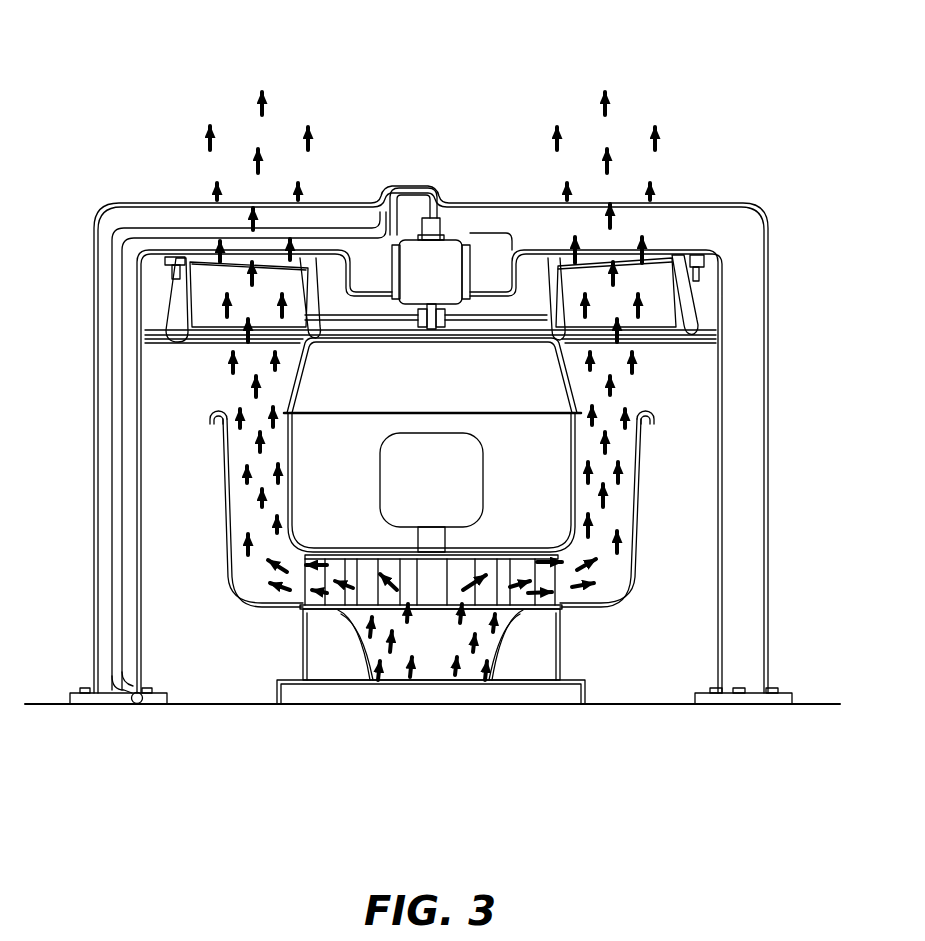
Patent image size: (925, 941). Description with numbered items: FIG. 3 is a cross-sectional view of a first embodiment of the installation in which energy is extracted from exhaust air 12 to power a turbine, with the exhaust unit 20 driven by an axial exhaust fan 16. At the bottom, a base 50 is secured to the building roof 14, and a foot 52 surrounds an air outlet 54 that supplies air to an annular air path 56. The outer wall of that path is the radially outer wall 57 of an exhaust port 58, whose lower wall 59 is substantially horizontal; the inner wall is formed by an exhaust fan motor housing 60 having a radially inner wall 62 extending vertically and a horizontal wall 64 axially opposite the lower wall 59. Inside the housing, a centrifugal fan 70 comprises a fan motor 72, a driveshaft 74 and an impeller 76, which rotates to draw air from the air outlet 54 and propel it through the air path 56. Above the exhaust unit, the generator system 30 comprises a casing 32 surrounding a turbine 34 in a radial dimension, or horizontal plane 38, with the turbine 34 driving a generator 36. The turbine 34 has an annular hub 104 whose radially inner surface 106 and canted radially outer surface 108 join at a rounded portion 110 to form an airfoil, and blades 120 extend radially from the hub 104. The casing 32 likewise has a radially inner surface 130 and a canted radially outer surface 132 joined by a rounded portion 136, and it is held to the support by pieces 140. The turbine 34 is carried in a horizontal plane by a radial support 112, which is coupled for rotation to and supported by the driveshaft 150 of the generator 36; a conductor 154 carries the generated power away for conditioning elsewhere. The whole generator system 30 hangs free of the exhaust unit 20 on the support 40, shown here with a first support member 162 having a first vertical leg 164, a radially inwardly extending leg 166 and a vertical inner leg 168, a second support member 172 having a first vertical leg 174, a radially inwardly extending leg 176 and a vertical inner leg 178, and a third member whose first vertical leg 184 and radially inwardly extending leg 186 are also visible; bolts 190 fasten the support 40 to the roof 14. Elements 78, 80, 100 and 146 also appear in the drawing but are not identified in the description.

The exhaust air 12 is at (240, 605).
The building roof 14 is at (800, 700).
The exhaust fan 16 is at (240, 548).
The exhaust unit 20 is at (265, 622).
The generator system 30 is at (715, 290).
The casing 32 is at (690, 325).
The turbine 34 is at (716, 205).
The generator 36 is at (445, 245).
The horizontal plane 38 is at (155, 200).
The support 40 is at (770, 195).
The base 50 is at (585, 710).
The foot 52 is at (562, 655).
The air outlet 54 is at (500, 640).
The annular air path 56 is at (623, 538).
The radially outer wall 57 is at (633, 477).
The exhaust port 58 is at (650, 424).
The lower wall 59 is at (585, 628).
The exhaust fan motor housing 60 is at (540, 440).
The radially inner wall 62 is at (293, 465).
The horizontal wall 64 is at (565, 385).
The centrifugal fan 70 is at (490, 478).
The fan motor 72 is at (470, 510).
The driveshaft 74 is at (445, 540).
The impeller 76 is at (500, 578).
The grid support 78 is at (315, 598).
The outer chamber wall 80 is at (610, 520).
The fan assembly 100 is at (340, 225).
The annular hub 104 is at (325, 215).
The radially inner surface 106 is at (335, 310).
The radially outer surface 108 is at (310, 340).
The rounded portion 110 is at (345, 310).
The radial support 112 is at (480, 317).
The blades 120 is at (675, 258).
The radially inner surface 130 is at (695, 296).
The radially outer surface 132 is at (713, 345).
The rounded portion 136 is at (615, 130).
The pieces 140 is at (175, 255).
The duct 146 is at (160, 240).
The driveshaft 150 is at (437, 325).
The conductor 154 is at (435, 185).
The first support member 162 is at (738, 455).
The first vertical leg 164 is at (750, 435).
The radially inwardly extending leg 166 is at (770, 205).
The vertical inner leg 168 is at (505, 230).
The second support member 172 is at (100, 520).
The first vertical leg 174 is at (100, 475).
The radially inwardly extending leg 176 is at (192, 200).
The vertical inner leg 178 is at (388, 200).
The first vertical leg 184 is at (384, 265).
The radially inwardly extending leg 186 is at (458, 330).
The bolts 190 is at (705, 705).